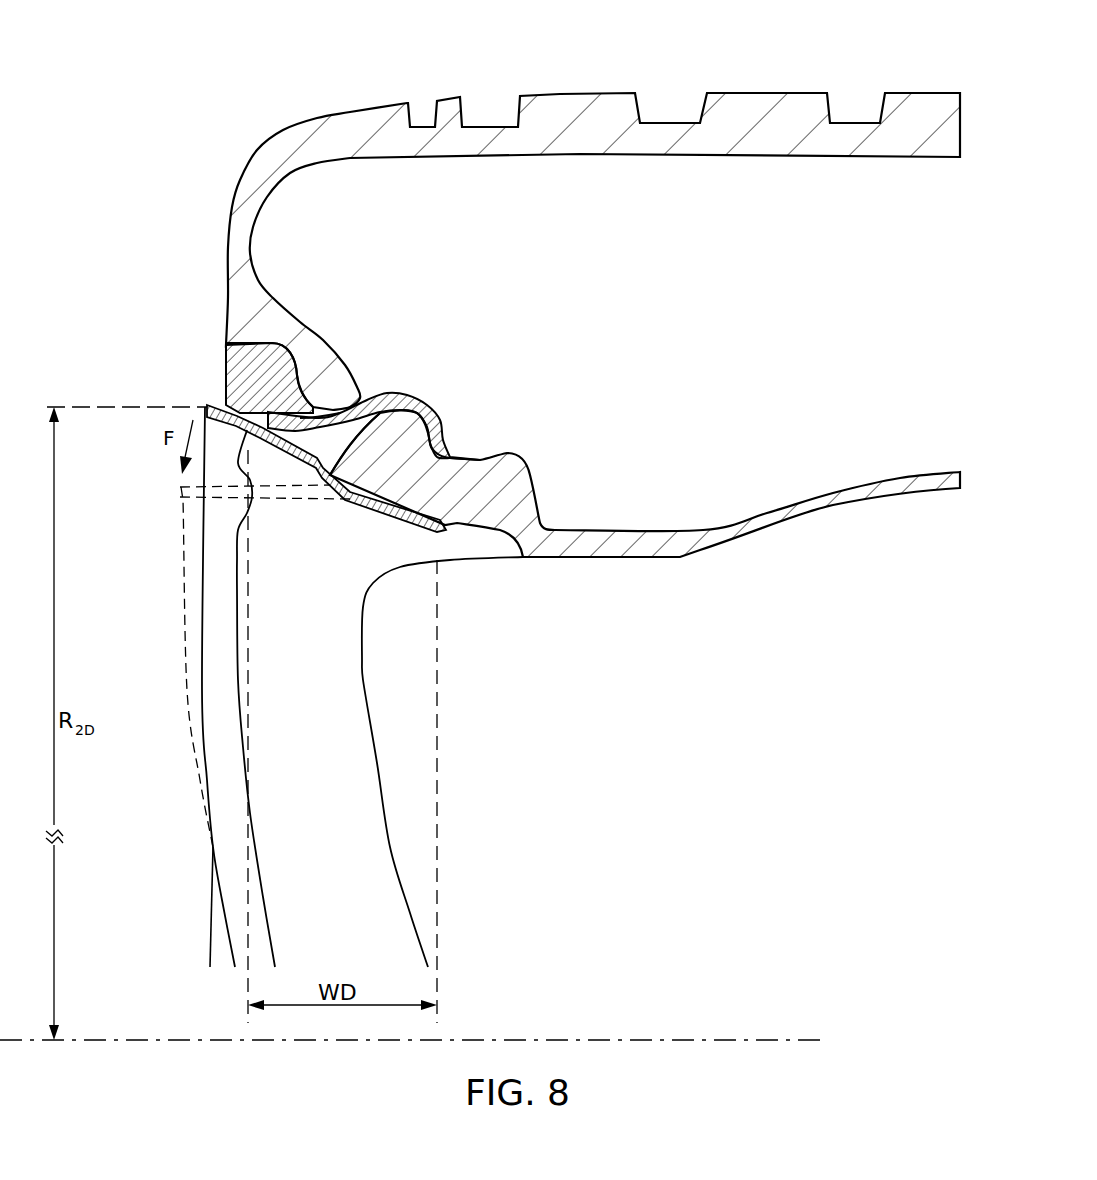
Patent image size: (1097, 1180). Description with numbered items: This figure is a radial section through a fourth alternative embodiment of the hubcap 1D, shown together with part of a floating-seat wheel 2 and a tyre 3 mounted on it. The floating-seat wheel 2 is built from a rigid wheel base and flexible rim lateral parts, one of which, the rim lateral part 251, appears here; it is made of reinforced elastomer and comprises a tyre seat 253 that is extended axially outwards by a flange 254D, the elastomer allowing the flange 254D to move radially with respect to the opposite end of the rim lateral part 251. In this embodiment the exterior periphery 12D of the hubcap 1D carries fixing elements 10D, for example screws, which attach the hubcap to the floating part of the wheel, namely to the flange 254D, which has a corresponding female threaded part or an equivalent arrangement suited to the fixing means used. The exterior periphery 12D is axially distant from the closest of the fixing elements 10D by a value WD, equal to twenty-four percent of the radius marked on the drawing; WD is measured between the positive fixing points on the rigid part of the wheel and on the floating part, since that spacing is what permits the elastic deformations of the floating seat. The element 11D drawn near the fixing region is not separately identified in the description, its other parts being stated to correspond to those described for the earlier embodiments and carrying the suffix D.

The hubcap 1D is at (302, 545).
The floating-seat wheel 2 is at (729, 674).
The tread 3 is at (748, 110).
The fixing elements 10D is at (347, 481).
The bead core 11D is at (402, 530).
The exterior periphery 12D is at (230, 438).
The rim lateral part 251 is at (417, 407).
The tyre seat 253 is at (333, 393).
The flange 254D is at (260, 377).